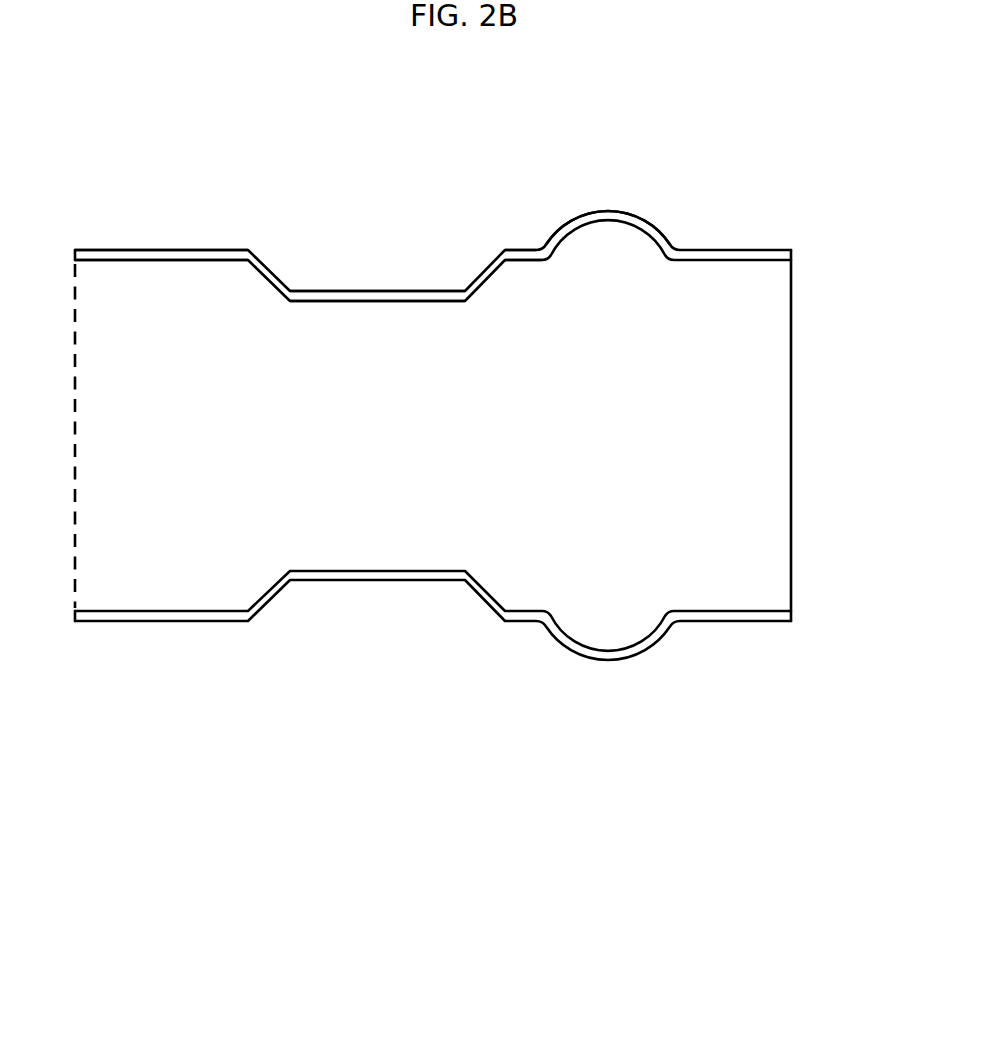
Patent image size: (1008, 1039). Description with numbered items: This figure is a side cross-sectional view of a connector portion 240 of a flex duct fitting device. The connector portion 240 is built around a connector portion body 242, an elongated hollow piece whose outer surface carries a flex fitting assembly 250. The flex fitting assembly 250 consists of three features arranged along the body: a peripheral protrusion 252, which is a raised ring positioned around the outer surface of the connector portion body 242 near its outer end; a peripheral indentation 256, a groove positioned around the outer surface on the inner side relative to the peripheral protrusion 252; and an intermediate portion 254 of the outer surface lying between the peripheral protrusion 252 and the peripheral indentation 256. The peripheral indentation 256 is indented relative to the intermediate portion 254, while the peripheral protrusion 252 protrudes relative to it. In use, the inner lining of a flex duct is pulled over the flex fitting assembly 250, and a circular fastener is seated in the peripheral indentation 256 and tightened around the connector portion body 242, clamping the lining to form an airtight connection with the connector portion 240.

The connector portion 240 is at (752, 155).
The connector portion body 242 is at (195, 243).
The flex fitting assembly 250 is at (406, 762).
The peripheral protrusion 252 is at (592, 202).
The intermediate portion 254 is at (523, 248).
The peripheral indentation 256 is at (378, 278).